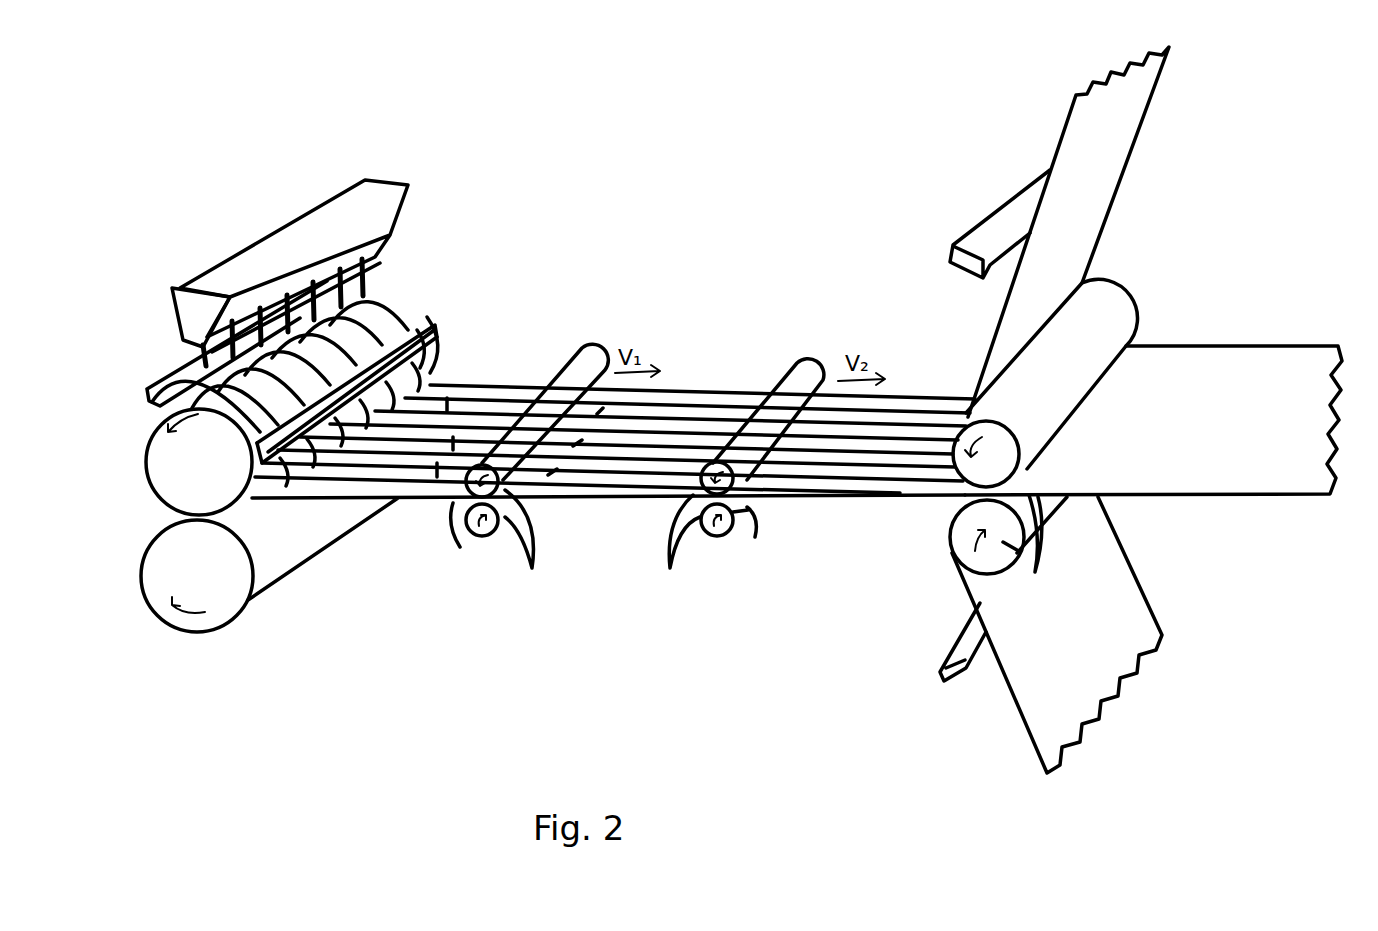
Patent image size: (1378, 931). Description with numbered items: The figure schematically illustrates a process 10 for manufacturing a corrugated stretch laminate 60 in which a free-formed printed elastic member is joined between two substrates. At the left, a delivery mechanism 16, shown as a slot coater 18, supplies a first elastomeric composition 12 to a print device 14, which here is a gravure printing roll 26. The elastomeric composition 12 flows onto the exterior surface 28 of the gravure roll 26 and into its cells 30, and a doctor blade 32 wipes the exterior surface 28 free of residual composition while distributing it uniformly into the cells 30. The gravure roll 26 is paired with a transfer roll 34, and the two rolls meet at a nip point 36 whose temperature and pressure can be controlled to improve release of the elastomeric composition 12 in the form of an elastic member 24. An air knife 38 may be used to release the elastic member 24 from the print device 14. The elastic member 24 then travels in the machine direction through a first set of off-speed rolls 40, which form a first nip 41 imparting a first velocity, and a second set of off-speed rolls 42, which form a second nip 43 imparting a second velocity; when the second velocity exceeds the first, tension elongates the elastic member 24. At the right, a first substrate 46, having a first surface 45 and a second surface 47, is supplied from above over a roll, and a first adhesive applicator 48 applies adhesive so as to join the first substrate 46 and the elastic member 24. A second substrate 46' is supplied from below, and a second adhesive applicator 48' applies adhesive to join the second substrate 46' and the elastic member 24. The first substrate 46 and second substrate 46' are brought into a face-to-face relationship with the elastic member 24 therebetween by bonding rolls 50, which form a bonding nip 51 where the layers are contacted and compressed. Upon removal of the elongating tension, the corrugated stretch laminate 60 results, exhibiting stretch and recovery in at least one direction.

The process 10 is at (683, 167).
The elastomeric composition 12 is at (375, 307).
The print device 14 is at (103, 470).
The delivery mechanism 16 is at (143, 322).
The slot coater 18 is at (410, 203).
The elastic member 24 is at (426, 505).
The gravure printing roll 26 is at (173, 488).
The exterior surface 28 is at (405, 327).
The cells 30 is at (400, 310).
The doctor blade 32 is at (148, 403).
The transfer roll 34 is at (157, 587).
The nip point 36 is at (259, 518).
The air knife 38 is at (437, 340).
The first set of off-speed rolls 40 is at (537, 474).
The first nip 41 is at (474, 539).
The second set of off-speed rolls 42 is at (744, 484).
The second nip 43 is at (743, 529).
The first surface 45 is at (1043, 153).
The first substrate 46 is at (1068, 232).
The second substrate 46' is at (1090, 635).
The second surface 47 is at (1092, 209).
The first adhesive applicator 48 is at (963, 224).
The second adhesive applicator 48' is at (930, 655).
The bonding rolls 50 is at (1007, 552).
The bonding nip 51 is at (1049, 468).
The corrugated stretch laminate 60 is at (1245, 355).